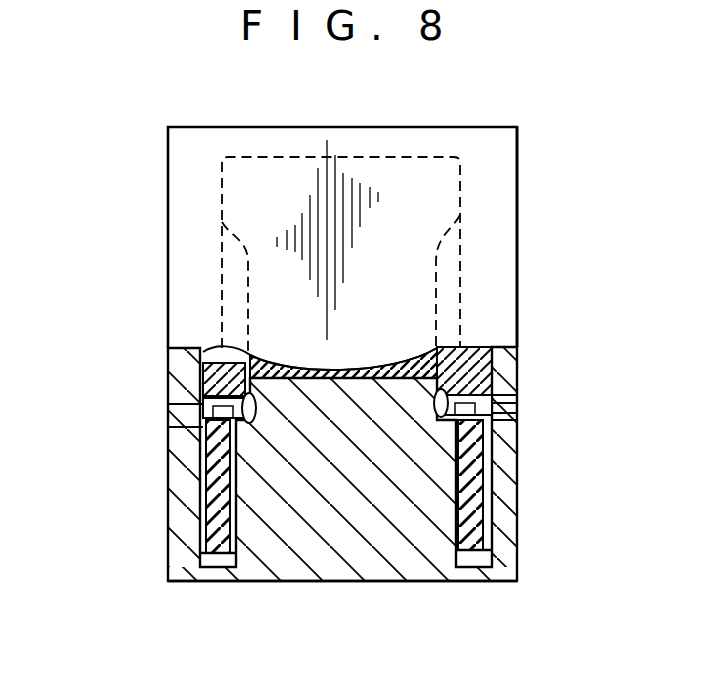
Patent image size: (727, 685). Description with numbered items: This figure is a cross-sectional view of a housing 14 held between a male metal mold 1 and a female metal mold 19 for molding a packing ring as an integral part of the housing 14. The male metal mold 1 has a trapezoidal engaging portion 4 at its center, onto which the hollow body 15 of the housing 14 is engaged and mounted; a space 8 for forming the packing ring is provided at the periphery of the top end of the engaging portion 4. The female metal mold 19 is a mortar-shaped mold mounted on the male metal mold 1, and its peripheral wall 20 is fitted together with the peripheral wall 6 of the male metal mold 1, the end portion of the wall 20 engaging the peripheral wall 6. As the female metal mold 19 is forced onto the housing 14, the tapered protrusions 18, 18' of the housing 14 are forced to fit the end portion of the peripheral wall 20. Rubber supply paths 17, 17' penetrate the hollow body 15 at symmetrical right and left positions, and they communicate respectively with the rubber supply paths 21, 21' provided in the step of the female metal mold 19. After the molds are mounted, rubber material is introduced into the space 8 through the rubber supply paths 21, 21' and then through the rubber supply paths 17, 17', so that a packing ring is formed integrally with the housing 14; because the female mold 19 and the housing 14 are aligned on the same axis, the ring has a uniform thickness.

The male metal mold 1 is at (385, 583).
The engaging portion 4 is at (395, 350).
The peripheral wall 6 is at (517, 497).
The space 8 is at (207, 368).
The housing 14 is at (232, 254).
The hollow body 15 is at (220, 562).
The rubber supply path 17 is at (523, 339).
The rubber supply path 17' is at (147, 364).
The tapered protrusion 18 is at (535, 484).
The tapered protrusion 18' is at (139, 486).
The female metal mold 19 is at (433, 121).
The peripheral wall 20 is at (517, 213).
The rubber supply path 21 is at (522, 387).
The rubber supply path 21' is at (152, 415).